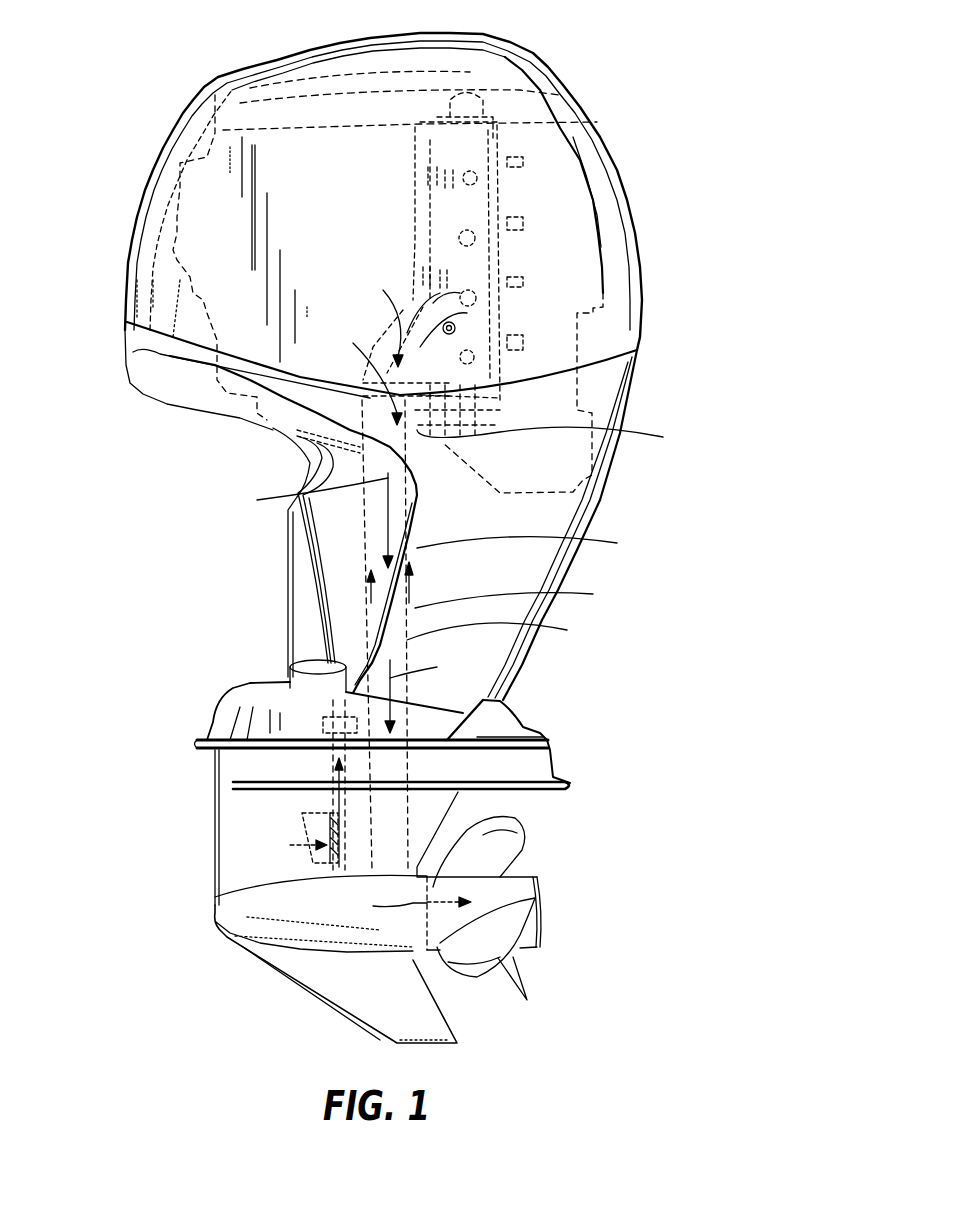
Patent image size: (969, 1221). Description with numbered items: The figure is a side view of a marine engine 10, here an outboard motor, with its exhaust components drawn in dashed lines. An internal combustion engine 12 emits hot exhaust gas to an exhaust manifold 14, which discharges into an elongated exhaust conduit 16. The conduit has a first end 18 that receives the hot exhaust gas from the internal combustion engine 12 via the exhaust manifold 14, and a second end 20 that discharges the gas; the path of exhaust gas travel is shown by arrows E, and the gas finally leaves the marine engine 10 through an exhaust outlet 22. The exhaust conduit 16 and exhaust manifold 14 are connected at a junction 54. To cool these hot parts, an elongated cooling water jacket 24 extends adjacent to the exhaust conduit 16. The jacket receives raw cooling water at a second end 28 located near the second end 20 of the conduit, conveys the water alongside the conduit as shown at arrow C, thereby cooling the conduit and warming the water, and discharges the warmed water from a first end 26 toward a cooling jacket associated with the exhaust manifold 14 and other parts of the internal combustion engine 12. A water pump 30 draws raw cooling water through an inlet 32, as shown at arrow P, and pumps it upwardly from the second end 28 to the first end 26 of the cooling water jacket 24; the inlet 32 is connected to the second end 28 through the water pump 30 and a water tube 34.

The marine engine 10 is at (677, 50).
The internal combustion engine 12 is at (223, 215).
The exhaust manifold 14 is at (480, 143).
The exhaust conduit 16 is at (383, 537).
The first end 18 is at (370, 404).
The second end 20 is at (500, 629).
The exhaust outlet 22 is at (555, 913).
The cooling water jacket 24 is at (532, 542).
The first end 26 is at (554, 439).
The second end 28 is at (518, 594).
The water pump 30 is at (317, 727).
The inlet 32 is at (310, 860).
The water tube 34 is at (390, 707).
The junction 54 is at (180, 343).
The exhaust gas travel arrows E is at (353, 591).
The cooling water flow arrow C is at (370, 588).
The pump flow arrow P is at (337, 797).